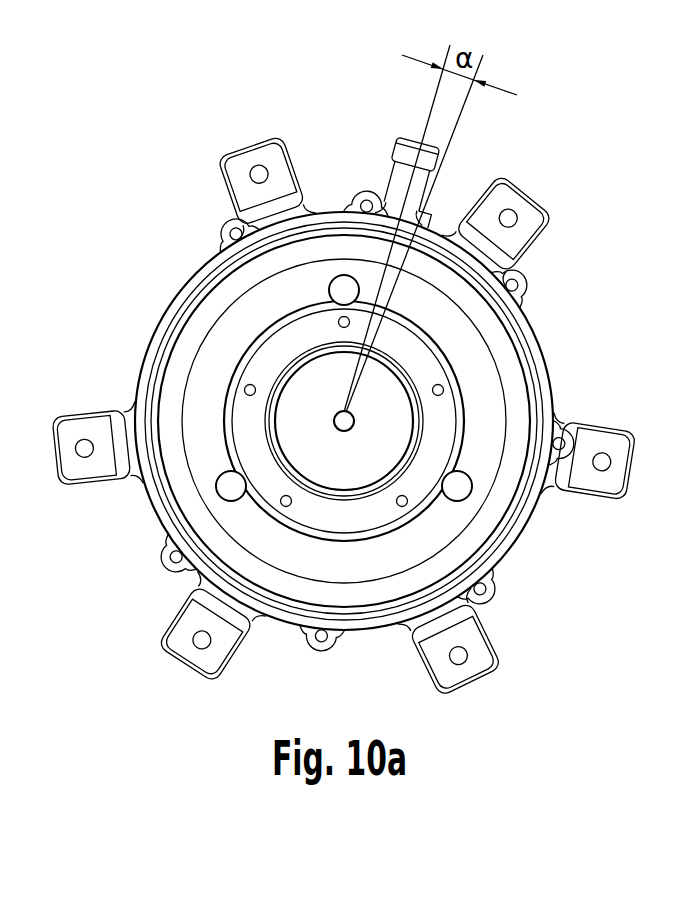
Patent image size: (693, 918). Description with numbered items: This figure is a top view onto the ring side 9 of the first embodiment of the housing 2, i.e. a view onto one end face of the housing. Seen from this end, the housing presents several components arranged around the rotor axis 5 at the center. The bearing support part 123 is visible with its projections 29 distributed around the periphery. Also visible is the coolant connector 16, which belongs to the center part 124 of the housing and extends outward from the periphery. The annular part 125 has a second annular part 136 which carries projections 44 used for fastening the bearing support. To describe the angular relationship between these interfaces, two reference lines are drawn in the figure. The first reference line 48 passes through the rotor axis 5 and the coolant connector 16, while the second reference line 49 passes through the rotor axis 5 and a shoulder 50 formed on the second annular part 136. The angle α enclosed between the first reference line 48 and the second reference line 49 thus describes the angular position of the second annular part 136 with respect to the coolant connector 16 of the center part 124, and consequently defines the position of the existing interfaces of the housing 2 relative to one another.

The housing 2 is at (362, 382).
The rotor axis 5 is at (336, 421).
The ring side 9 is at (168, 320).
The coolant connector 16 is at (364, 168).
The center part 124 is at (400, 172).
The projections 29 is at (361, 416).
The bearing support part 123 is at (523, 210).
The projections 44 is at (412, 454).
The annular part 125 is at (412, 454).
The second annular part 136 is at (490, 590).
The first reference line 48 is at (437, 88).
The second reference line 49 is at (468, 97).
The shoulder 50 is at (433, 212).